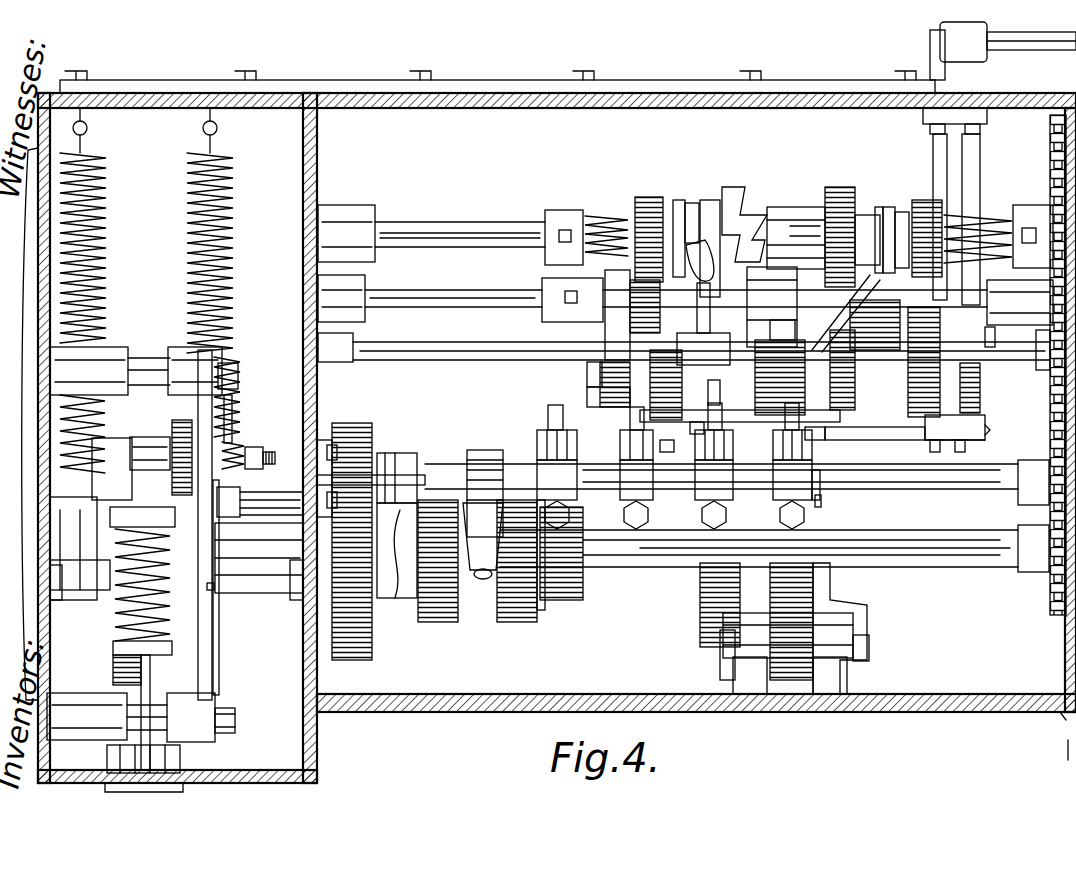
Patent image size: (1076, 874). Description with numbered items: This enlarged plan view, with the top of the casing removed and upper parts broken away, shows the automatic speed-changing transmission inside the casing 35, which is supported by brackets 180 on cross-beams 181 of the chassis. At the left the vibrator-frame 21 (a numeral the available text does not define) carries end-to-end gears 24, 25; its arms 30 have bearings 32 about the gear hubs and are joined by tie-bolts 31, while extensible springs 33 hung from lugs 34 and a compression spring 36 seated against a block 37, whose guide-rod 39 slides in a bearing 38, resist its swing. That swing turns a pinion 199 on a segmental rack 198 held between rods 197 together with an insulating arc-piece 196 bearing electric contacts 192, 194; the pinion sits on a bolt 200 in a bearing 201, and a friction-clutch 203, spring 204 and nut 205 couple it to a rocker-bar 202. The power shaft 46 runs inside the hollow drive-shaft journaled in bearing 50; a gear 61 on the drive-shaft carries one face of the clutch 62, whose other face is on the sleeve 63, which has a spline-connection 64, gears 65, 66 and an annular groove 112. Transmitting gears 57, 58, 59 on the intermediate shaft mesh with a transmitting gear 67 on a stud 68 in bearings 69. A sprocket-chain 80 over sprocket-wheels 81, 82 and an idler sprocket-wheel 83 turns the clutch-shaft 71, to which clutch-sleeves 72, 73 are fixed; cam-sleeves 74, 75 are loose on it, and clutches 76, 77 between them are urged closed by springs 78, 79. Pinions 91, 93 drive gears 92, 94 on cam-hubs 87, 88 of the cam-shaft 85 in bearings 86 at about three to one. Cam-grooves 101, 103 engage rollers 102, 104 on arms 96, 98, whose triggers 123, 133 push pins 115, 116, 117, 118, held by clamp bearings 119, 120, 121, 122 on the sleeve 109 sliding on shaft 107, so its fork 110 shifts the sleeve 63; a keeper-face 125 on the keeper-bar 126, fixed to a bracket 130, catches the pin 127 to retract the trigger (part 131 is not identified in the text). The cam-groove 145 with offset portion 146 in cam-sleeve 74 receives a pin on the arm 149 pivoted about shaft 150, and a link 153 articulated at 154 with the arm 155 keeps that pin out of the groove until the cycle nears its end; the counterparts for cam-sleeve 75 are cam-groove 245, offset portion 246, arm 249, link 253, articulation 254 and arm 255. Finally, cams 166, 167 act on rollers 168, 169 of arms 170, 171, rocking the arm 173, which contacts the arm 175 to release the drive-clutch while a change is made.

The block 21 is at (115, 438).
The gear 24 is at (172, 660).
The gear 25 is at (113, 672).
The arm 30 is at (88, 567).
The tie-bolt 31 is at (255, 490).
The bearing 32 is at (228, 577).
The extensible spring 33 is at (185, 240).
The lug 34 is at (238, 135).
The casing 35 is at (691, 401).
The compression spring 36 is at (113, 636).
The block 37 is at (128, 515).
The bearing 38 is at (180, 758).
The guide-rod 39 is at (216, 754).
The power shaft 46 is at (965, 568).
The bearing 50 is at (290, 595).
The transmitting gear 57 is at (525, 623).
The transmitting gear 58 is at (700, 598).
The transmitting gear 59 is at (770, 583).
The gear 61 is at (362, 661).
The clutch 62 is at (395, 600).
The sleeve 63 is at (540, 610).
The spline-connection 64 is at (618, 567).
The gear 65 is at (438, 623).
The gear 66 is at (575, 601).
The transmitting gear 67 is at (800, 640).
The stud 68 is at (869, 645).
The bearing 69 is at (722, 650).
The clutch-shaft 71 is at (406, 232).
The clutch-sleeve 72 is at (800, 207).
The clutch-sleeve 73 is at (775, 207).
The cam-sleeve 74 is at (898, 212).
The cam-sleeve 75 is at (652, 197).
The clutch 76 is at (836, 187).
The clutch 77 is at (740, 185).
The spring 78 is at (978, 215).
The spring 79 is at (588, 215).
The sprocket-chain 80 is at (1050, 148).
The sprocket-wheel 81 is at (1035, 574).
The sprocket-wheel 82 is at (1040, 205).
The idler sprocket-wheel 83 is at (1038, 460).
The cam-shaft 85 is at (676, 284).
The bearing 86 is at (365, 290).
The cam-hub 87 is at (908, 385).
The cam-hub 88 is at (585, 300).
The pinion 91 is at (923, 200).
The gear 92 is at (932, 452).
The pinion 93 is at (634, 210).
The gear 94 is at (587, 375).
The arm 96 is at (836, 395).
The arm 98 is at (690, 385).
The cam-groove 101 is at (876, 306).
The roller 102 is at (840, 416).
The cam-groove 103 is at (745, 288).
The roller 104 is at (688, 342).
The shaft 107 is at (965, 491).
The sleeve 109 is at (812, 506).
The fork 110 is at (467, 453).
The annular groove 112 is at (482, 583).
The pin 115 is at (548, 420).
The pin 116 is at (630, 420).
The pin 117 is at (720, 347).
The pin 118 is at (800, 386).
The clamp bearing 119 is at (557, 479).
The clamp bearing 120 is at (636, 479).
The clamp bearing 121 is at (714, 466).
The clamp bearing 122 is at (792, 466).
The trigger 123 is at (818, 492).
The keeper-face 125 is at (905, 440).
The keeper-bar 126 is at (958, 452).
The pin 127 is at (870, 450).
The bracket 130 is at (971, 438).
The pin 131 is at (662, 450).
The trigger 133 is at (690, 434).
The cam-groove 145 is at (877, 207).
The offset portion 146 is at (865, 215).
The arm 149 is at (893, 207).
The shaft 150 is at (1040, 362).
The link 153 is at (985, 126).
The articulation 154 is at (975, 200).
The arm 155 is at (947, 200).
The cam 166 is at (980, 370).
The cam 167 is at (610, 335).
The roller 168 is at (986, 418).
The roller 169 is at (596, 392).
The arm 170 is at (995, 338).
The arm 171 is at (566, 356).
The arm 173 is at (945, 78).
The arm 175 is at (1050, 50).
The bracket 180 is at (1065, 714).
The cross-beam 181 is at (1070, 745).
The electric contact 192 is at (216, 600).
The electric contact 194 is at (215, 688).
The arc-piece 196 is at (214, 668).
The rod 197 is at (128, 718).
The segmental rack 198 is at (232, 710).
The pinion 199 is at (175, 425).
The bolt 200 is at (280, 450).
The bearing 201 is at (170, 437).
The rocker-bar 202 is at (240, 418).
The friction-clutch 203 is at (236, 402).
The spring 204 is at (242, 444).
The nut 205 is at (256, 447).
The cam-groove 245 is at (690, 215).
The offset portion 246 is at (700, 205).
The arm 249 is at (678, 200).
The link 253 is at (712, 205).
The articulation 254 is at (836, 300).
The arm 255 is at (790, 330).